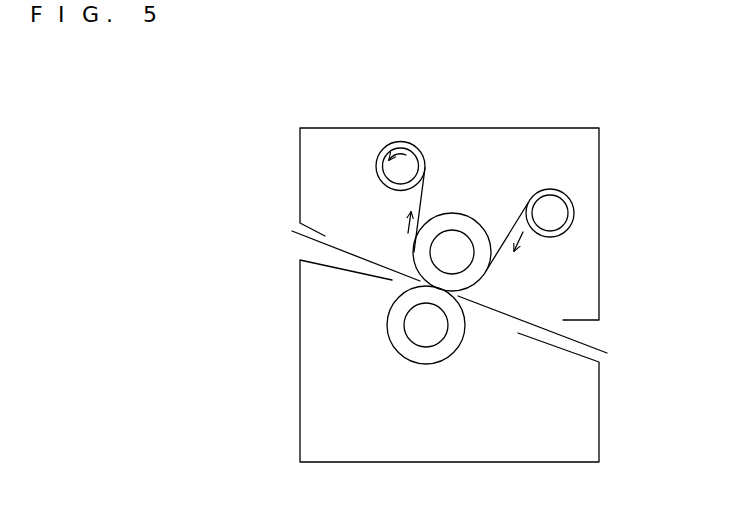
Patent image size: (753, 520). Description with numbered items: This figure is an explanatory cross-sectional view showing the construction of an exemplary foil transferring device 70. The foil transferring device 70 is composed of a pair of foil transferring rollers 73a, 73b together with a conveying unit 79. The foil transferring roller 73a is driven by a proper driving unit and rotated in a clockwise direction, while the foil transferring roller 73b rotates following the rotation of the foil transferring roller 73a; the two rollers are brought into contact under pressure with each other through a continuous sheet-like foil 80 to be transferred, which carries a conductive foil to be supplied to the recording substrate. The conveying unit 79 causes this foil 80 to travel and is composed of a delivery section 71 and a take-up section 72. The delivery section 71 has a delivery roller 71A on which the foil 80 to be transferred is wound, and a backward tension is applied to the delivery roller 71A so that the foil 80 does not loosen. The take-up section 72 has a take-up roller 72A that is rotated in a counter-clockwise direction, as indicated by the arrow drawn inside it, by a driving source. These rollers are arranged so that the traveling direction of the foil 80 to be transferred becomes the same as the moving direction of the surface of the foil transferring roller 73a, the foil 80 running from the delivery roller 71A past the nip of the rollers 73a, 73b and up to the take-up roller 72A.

The foil transferring device 70 is at (541, 94).
The delivery section 71 is at (558, 237).
The delivery roller 71A is at (613, 250).
The take-up section 72 is at (448, 147).
The take-up roller 72A is at (376, 166).
The foil transferring roller 73a is at (463, 190).
The foil transferring roller 73b is at (438, 388).
The conveying unit 79 is at (565, 168).
The foil to be transferred 80 is at (508, 223).